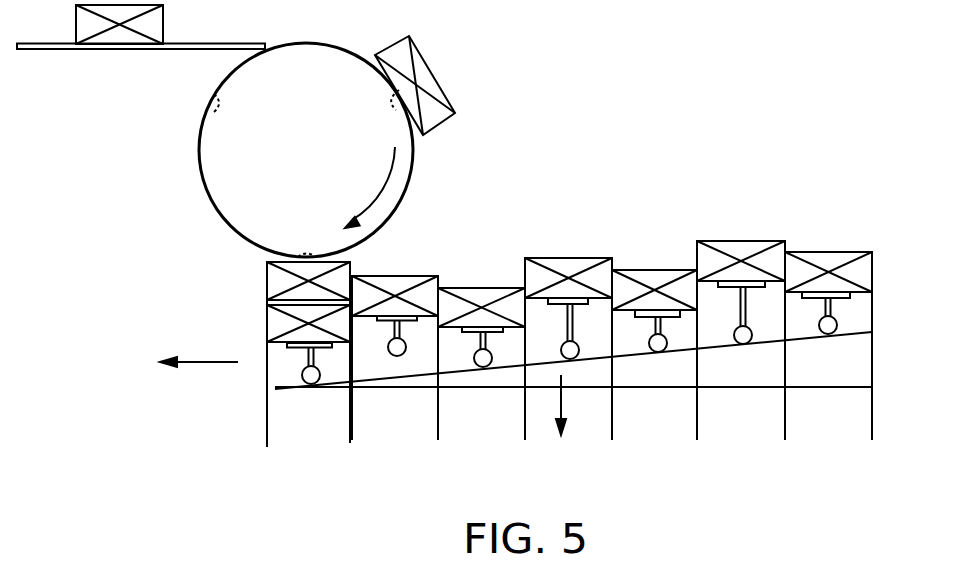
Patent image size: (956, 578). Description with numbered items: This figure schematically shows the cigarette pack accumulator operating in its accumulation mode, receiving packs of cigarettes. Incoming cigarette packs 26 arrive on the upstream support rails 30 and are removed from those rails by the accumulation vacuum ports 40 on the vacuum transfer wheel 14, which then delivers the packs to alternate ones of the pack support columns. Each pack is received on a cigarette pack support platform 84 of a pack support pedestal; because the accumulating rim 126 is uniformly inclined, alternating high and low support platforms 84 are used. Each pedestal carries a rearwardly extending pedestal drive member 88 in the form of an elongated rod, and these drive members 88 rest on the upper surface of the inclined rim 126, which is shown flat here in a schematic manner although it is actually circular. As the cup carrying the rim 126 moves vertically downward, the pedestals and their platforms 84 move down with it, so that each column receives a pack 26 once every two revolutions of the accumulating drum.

The vacuum transfer wheel 14 is at (448, 182).
The cigarette pack 26 is at (163, 20).
The upstream support rails 30 is at (60, 50).
The accumulation vacuum ports 40 is at (222, 103).
The cigarette pack support platform 84 is at (297, 349).
The pedestal drive member 88 is at (310, 384).
The inclined rim 126 is at (633, 356).